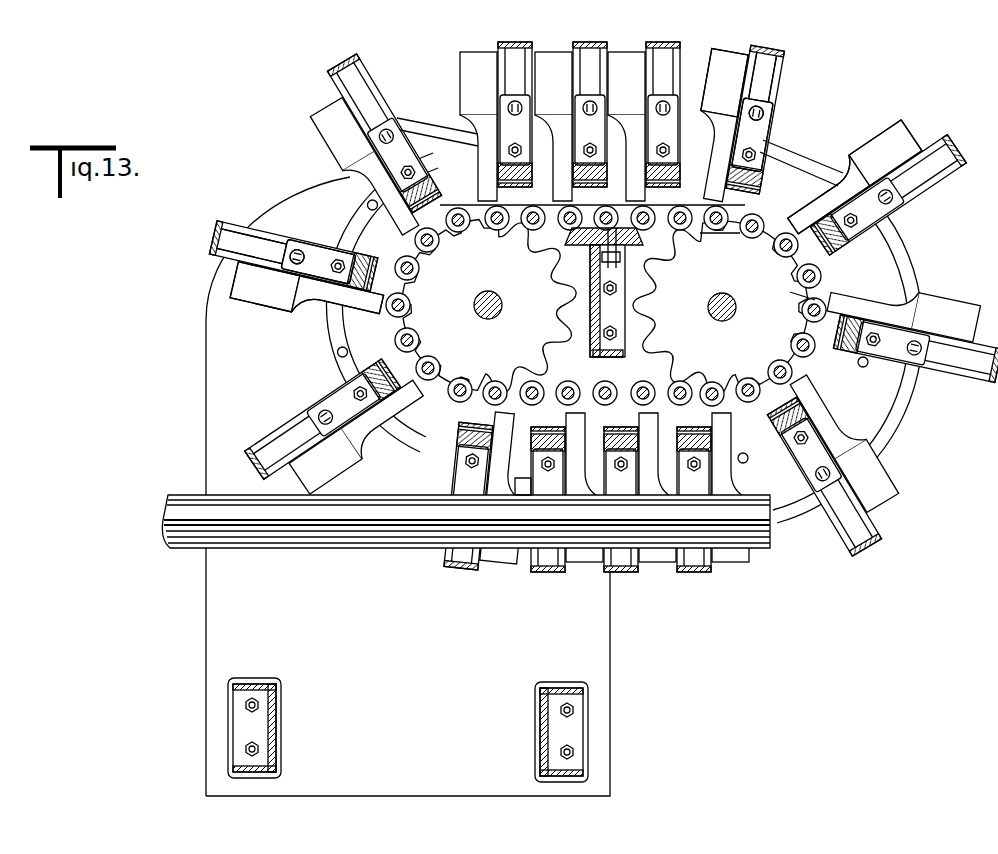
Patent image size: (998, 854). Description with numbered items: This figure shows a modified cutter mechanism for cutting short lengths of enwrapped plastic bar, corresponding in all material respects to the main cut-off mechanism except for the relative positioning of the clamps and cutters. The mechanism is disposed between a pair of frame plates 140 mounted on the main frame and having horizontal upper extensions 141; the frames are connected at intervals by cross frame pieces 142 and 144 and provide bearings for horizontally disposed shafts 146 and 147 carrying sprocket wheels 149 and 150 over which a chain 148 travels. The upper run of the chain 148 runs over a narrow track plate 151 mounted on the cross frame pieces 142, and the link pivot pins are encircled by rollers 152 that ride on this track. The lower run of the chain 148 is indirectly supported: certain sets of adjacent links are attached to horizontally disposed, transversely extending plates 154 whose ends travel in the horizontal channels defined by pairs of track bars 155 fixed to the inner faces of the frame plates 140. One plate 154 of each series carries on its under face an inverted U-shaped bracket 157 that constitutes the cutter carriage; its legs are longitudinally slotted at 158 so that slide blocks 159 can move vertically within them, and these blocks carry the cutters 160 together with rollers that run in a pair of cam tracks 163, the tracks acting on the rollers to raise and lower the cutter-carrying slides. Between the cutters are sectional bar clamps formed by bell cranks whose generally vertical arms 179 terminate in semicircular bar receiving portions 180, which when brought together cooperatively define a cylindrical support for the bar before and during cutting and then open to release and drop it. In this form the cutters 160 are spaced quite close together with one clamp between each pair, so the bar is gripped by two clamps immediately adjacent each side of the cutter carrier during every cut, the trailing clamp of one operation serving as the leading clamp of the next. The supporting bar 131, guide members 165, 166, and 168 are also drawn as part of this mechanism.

The support bar 131 is at (360, 548).
The frame plate 140 is at (612, 655).
The upper extension 141 is at (878, 397).
The cross frame piece 142 is at (626, 300).
The cross frame piece 144 is at (281, 727).
The shaft 146 is at (492, 294).
The shaft 147 is at (728, 322).
The chain 148 is at (612, 358).
The sprocket wheel 149 is at (420, 235).
The sprocket wheel 150 is at (815, 300).
The track plate 151 is at (720, 232).
The roller 152 is at (712, 376).
The plate 154 is at (405, 296).
The track bar 155 is at (489, 306).
The inverted U-shaped bracket 157 is at (240, 235).
The longitudinal slot 158 is at (288, 228).
The slide block 159 is at (315, 252).
The cutter 160 is at (300, 256).
The cam track 163 is at (345, 362).
The guide ring 165 is at (327, 337).
The cam member 166 is at (523, 495).
The right guide ring 168 is at (905, 268).
The bell crank arm 179 is at (308, 318).
The bar receiving portion 180 is at (262, 300).